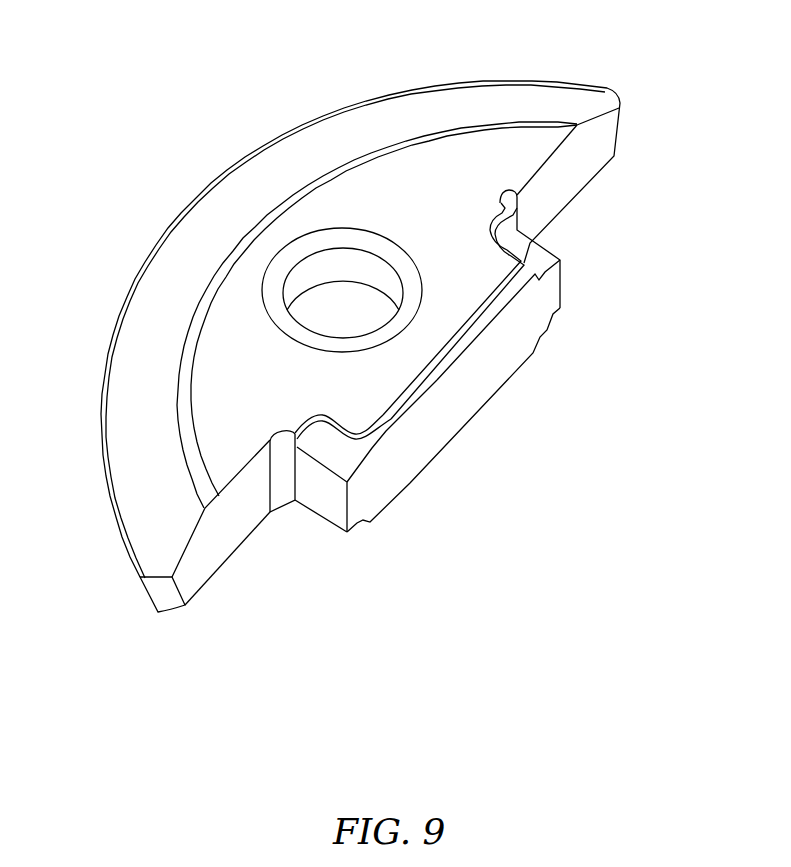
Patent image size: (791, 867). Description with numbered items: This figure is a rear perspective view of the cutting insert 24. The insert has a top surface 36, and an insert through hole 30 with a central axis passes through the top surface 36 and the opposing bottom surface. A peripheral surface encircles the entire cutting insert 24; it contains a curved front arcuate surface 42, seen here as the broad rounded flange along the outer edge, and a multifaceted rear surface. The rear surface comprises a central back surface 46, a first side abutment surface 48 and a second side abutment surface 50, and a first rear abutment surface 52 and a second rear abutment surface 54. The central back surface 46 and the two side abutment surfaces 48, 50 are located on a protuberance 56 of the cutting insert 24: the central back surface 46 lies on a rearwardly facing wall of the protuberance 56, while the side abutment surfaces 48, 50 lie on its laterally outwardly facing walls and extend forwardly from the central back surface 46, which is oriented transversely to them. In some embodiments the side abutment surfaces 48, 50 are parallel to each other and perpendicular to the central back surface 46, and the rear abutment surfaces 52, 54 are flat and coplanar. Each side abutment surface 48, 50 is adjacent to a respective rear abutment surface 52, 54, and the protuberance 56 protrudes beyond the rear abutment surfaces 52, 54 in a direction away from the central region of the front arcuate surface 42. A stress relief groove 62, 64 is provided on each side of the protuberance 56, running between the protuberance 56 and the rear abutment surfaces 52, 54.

The cutting insert 24 is at (180, 83).
The insert through hole 30 is at (292, 283).
The top surface 36 is at (428, 170).
The front arcuate surface 42 is at (103, 481).
The central back surface 46 is at (463, 390).
The first side abutment surface 48 is at (337, 507).
The second side abutment surface 50 is at (560, 276).
The first rear abutment surface 52 is at (235, 527).
The second rear abutment surface 54 is at (575, 170).
The protuberance 56 is at (377, 415).
The stress relief groove 62 is at (285, 487).
The stress relief groove 64 is at (510, 212).